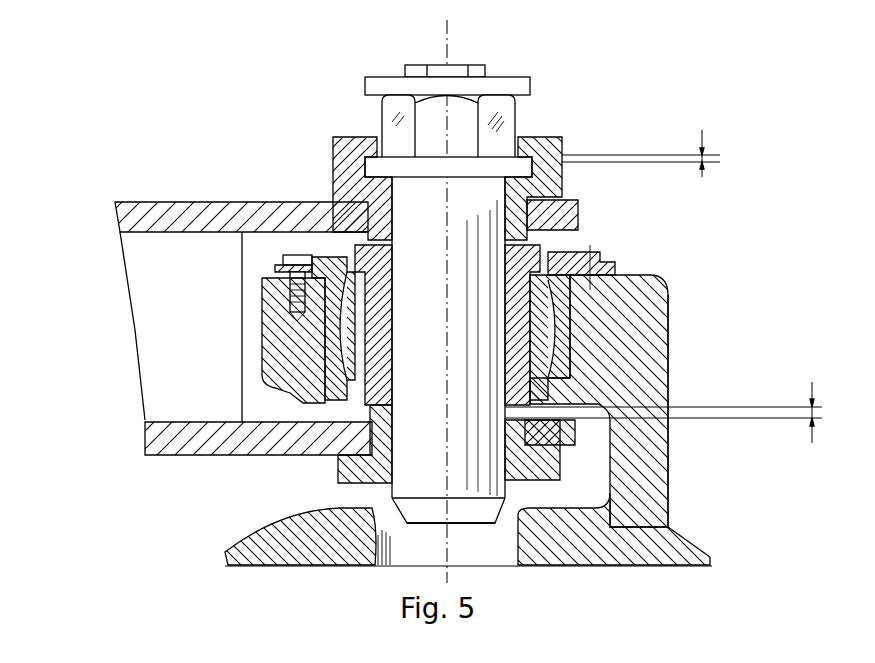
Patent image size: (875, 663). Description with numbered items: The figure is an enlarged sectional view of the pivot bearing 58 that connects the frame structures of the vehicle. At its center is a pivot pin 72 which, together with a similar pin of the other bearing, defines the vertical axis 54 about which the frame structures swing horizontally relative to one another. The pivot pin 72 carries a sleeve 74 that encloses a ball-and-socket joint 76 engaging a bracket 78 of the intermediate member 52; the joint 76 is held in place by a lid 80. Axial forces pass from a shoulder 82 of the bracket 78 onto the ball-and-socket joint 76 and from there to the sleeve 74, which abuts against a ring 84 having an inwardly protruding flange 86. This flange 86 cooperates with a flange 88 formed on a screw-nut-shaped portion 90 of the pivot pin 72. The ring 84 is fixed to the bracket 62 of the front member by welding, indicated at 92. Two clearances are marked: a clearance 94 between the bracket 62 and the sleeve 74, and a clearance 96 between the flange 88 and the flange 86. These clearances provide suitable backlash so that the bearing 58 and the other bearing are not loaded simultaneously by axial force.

The intermediate member 52 is at (627, 550).
The vertical axis 54 is at (447, 48).
The bearing 58 is at (646, 92).
The bracket 62 is at (155, 205).
The pivot pin 72 is at (438, 482).
The sleeve 74 is at (378, 277).
The ball-and-socket joint 76 is at (355, 358).
The bracket 78 is at (268, 364).
The lid 80 is at (330, 260).
The shoulder 82 is at (313, 403).
The ring 84 is at (343, 176).
The inwardly protruding flange 86 is at (365, 152).
The flange 88 is at (503, 172).
The screw nut shaped portion 90 is at (427, 105).
The welding 92 is at (568, 188).
The clearance 94 is at (815, 420).
The clearance 96 is at (706, 158).